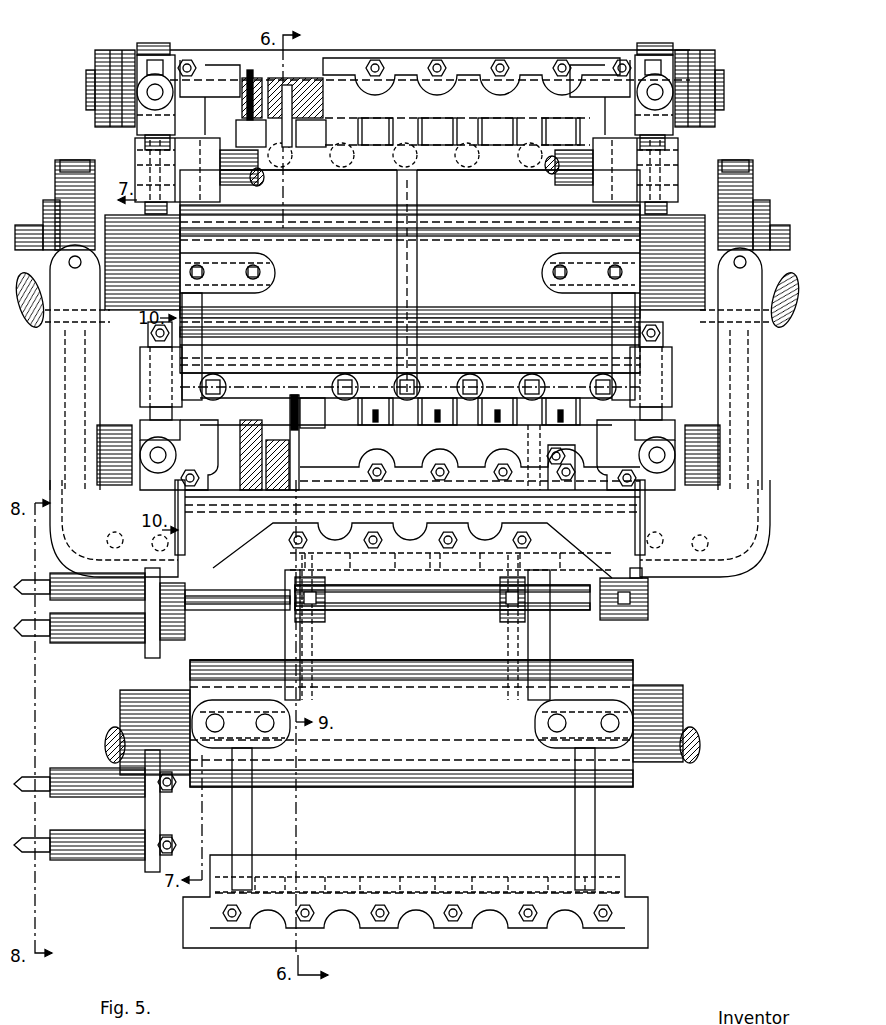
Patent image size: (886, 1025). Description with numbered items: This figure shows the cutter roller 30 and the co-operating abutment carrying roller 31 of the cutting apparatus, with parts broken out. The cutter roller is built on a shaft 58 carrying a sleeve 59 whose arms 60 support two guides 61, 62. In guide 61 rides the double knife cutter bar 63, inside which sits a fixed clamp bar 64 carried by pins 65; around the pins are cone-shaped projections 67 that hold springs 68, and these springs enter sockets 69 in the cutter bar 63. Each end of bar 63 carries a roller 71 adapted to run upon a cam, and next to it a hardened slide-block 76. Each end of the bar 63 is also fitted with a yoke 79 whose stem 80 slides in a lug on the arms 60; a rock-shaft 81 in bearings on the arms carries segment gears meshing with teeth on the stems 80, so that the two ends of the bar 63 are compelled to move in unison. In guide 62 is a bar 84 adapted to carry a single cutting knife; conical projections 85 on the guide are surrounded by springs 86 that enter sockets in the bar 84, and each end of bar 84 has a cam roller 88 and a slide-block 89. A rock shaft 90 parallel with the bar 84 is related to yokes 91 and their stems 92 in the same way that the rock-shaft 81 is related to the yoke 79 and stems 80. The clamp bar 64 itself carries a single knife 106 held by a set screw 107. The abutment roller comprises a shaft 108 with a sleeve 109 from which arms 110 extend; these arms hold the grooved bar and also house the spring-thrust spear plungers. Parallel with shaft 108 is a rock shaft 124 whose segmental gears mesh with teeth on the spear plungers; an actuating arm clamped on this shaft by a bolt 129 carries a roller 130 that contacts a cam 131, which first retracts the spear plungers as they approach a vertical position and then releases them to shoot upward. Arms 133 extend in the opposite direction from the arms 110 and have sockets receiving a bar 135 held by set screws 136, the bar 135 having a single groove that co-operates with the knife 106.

The cutter roller 30 is at (640, 231).
The abutment carrying roller 31 is at (610, 663).
The shaft 58 is at (692, 240).
The sleeve 59 is at (496, 220).
The arms 60 is at (405, 295).
The guide 61 is at (441, 380).
The guide 62 is at (443, 162).
The double knife cutter bar 63 is at (338, 490).
The clamp bar 64 is at (262, 506).
The pins 65 is at (312, 461).
The cone-shaped projections 67 is at (299, 420).
The springs 68 is at (266, 421).
The sockets 69 is at (318, 442).
The roller 71 is at (106, 428).
The slide-block 76 is at (142, 497).
The yoke 79 is at (218, 440).
The stem 80 is at (160, 406).
The rock-shaft 81 is at (323, 371).
The bar 84 is at (190, 60).
The conical projections 85 is at (297, 112).
The springs 86 is at (268, 120).
The cam roller 88 is at (94, 58).
The slide-block 89 is at (142, 50).
The rock shaft 90 is at (246, 178).
The yokes 91 is at (148, 127).
The stems 92 is at (160, 143).
The knife 106 is at (251, 57).
The set screw 107 is at (377, 61).
The shaft 108 is at (678, 702).
The sleeve 109 is at (628, 676).
The arms 110 is at (283, 634).
The rock shaft 124 is at (382, 601).
The bolt 129 is at (176, 582).
The roller 130 is at (145, 600).
The cam 131 is at (152, 650).
The arms 133 is at (247, 843).
The bar 135 is at (537, 937).
The set screws 136 is at (452, 905).